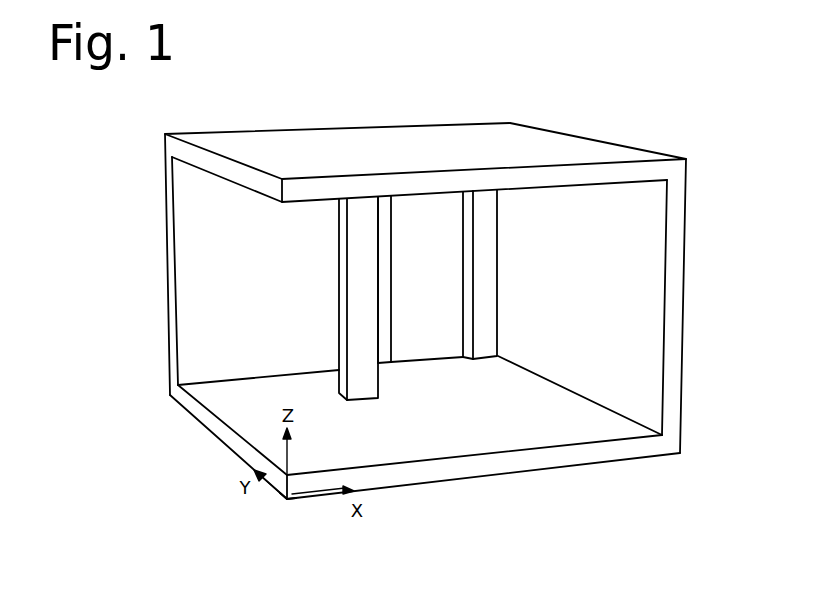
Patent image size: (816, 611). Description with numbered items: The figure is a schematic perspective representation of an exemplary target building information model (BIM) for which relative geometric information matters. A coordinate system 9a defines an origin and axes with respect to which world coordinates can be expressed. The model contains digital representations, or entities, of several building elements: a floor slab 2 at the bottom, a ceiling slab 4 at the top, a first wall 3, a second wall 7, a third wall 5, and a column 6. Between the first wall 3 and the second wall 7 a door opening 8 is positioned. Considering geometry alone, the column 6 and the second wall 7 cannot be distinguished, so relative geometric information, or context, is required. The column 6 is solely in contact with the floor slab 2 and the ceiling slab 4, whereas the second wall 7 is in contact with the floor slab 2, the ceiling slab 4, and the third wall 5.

The floor slab 2 is at (240, 445).
The first wall 3 is at (192, 288).
The ceiling slab 4 is at (237, 176).
The third wall 5 is at (672, 368).
The column 6 is at (360, 347).
The second wall 7 is at (485, 240).
The door opening 8 is at (433, 232).
The coordinate system 9a is at (290, 498).